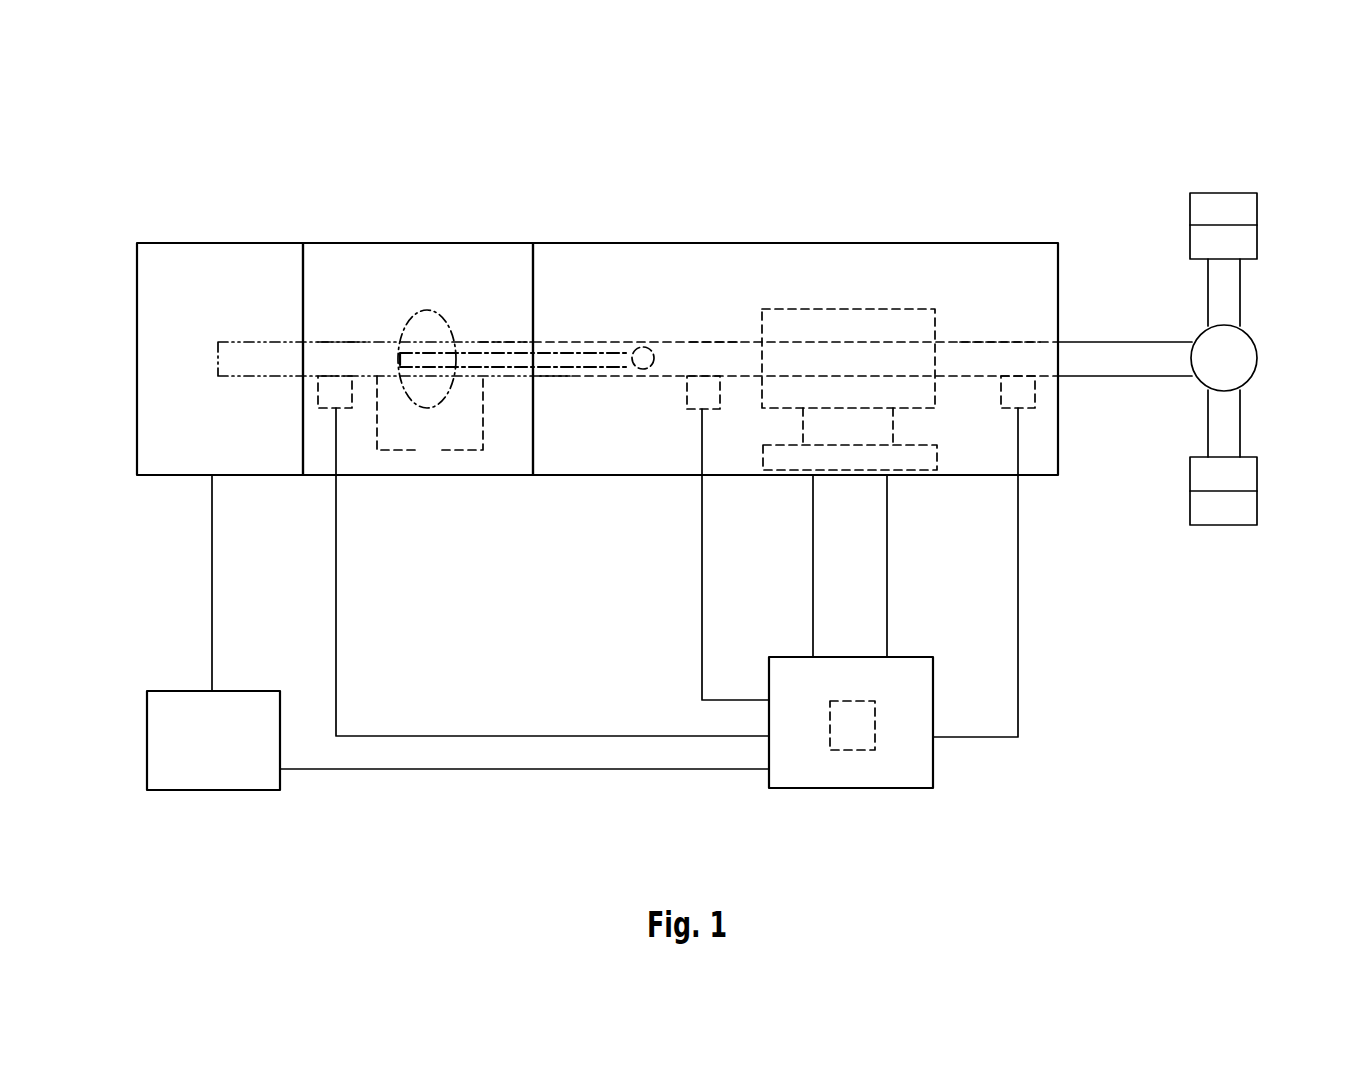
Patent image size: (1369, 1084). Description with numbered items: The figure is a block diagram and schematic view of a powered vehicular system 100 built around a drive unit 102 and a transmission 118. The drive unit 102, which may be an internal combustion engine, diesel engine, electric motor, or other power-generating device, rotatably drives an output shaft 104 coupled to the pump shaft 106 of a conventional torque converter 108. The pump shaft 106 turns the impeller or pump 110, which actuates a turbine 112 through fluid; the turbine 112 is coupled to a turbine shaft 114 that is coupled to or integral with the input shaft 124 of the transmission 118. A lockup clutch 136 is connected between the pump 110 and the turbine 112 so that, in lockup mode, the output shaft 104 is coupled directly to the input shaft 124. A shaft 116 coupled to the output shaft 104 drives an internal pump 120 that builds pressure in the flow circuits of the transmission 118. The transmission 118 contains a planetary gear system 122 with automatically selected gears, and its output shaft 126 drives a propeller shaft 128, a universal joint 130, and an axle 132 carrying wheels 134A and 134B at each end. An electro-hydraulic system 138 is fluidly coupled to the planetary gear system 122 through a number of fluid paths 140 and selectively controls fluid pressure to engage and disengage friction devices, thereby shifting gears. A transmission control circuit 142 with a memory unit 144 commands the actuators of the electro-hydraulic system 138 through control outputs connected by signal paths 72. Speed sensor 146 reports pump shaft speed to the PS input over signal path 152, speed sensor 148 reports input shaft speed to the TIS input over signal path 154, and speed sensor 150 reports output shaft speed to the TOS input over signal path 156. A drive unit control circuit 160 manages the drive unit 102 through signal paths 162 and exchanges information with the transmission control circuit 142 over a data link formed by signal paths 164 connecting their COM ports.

The vehicular system 100 is at (175, 175).
The drive unit 102 is at (245, 243).
The output shaft 104 is at (252, 343).
The pump shaft 106 is at (343, 342).
The torque converter 108 is at (425, 243).
The pump 110 is at (406, 313).
The turbine 112 is at (452, 318).
The turbine shaft 114 is at (501, 342).
The shaft 116 is at (549, 378).
The transmission 118 is at (795, 243).
The internal pump 120 is at (643, 347).
The planetary gear system 122 is at (876, 375).
The input shaft 124 is at (717, 342).
The output shaft 126 is at (993, 342).
The propeller shaft 128 is at (1125, 342).
The universal joint 130 is at (1253, 376).
The axle 132 is at (1242, 298).
The wheel 134A is at (1222, 193).
The wheel 134B is at (1222, 525).
The lockup clutch 136 is at (445, 450).
The electro-hydraulic system 138 is at (905, 470).
The fluid paths 140 is at (1040, 502).
The transmission control circuit 142 is at (825, 790).
The memory unit 144 is at (861, 750).
The speed sensor 146 is at (318, 392).
The speed sensor 148 is at (695, 395).
The speed sensor 150 is at (1037, 392).
The signal path 152 is at (485, 736).
The signal path 154 is at (702, 593).
The signal path 156 is at (1018, 625).
The signal paths 72 is at (813, 528).
The drive unit control circuit 160 is at (205, 790).
The signal paths 162 is at (212, 523).
The signal paths 164 is at (444, 769).